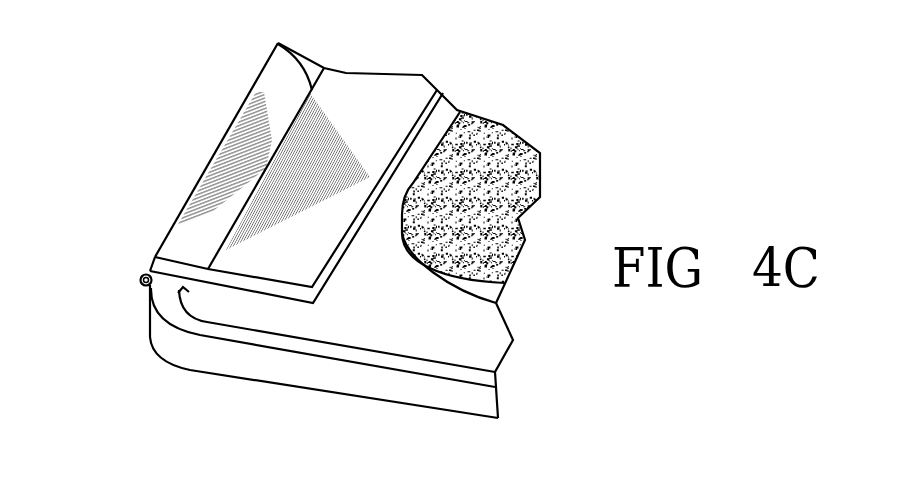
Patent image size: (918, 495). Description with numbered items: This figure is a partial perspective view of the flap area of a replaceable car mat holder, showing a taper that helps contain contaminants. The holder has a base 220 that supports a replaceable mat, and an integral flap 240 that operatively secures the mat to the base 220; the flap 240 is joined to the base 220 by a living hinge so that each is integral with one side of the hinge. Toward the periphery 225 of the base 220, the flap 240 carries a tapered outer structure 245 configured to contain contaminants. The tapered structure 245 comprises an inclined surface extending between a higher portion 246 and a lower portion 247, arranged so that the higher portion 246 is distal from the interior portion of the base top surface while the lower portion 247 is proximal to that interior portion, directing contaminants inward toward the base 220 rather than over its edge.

The base 220 is at (323, 370).
The periphery 225 is at (172, 296).
The integral flap 240 is at (378, 100).
The tapered structure 245 is at (230, 190).
The higher portion 246 is at (237, 112).
The lower portion 247 is at (270, 59).